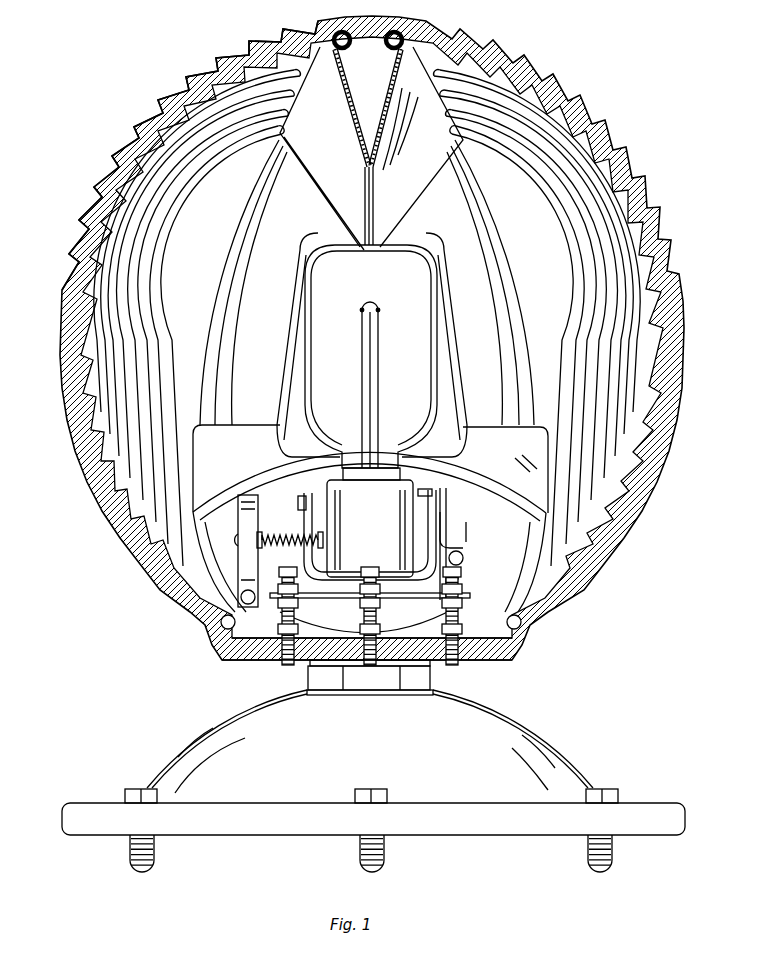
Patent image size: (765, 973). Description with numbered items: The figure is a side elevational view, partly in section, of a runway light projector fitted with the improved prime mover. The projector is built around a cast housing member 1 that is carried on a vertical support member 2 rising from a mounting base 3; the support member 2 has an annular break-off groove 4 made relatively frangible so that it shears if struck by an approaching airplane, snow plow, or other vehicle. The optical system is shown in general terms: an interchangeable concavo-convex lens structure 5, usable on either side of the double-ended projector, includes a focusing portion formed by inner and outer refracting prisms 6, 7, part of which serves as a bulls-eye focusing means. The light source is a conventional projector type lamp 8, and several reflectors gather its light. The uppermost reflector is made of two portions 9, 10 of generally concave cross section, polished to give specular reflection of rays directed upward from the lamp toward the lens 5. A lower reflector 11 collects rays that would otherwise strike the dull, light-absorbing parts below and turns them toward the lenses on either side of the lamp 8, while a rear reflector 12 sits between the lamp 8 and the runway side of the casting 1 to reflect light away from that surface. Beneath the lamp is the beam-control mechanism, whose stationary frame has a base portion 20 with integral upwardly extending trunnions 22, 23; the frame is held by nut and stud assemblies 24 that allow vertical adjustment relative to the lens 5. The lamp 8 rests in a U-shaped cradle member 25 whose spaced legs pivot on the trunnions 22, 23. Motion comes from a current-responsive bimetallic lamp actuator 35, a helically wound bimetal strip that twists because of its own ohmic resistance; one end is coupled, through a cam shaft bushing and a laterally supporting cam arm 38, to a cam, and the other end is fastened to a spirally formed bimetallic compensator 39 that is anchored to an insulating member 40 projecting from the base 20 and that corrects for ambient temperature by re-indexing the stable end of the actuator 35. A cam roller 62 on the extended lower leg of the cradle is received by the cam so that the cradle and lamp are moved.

The cast housing member 1 is at (250, 662).
The vertical support member 2 is at (322, 683).
The mounting base 3 is at (228, 735).
The annular break-off groove 4 is at (430, 664).
The lens structure 5 is at (58, 292).
The inner refracting prisms 6 is at (110, 230).
The outer refracting prisms 7 is at (110, 163).
The projector type lamp 8 is at (417, 306).
The uppermost reflector portion 9 is at (326, 148).
The uppermost reflector portion 10 is at (416, 147).
The lower reflector 11 is at (370, 529).
The rear reflector 12 is at (311, 245).
The base portion 20 is at (412, 598).
The trunnion 22 is at (309, 584).
The trunnion 23 is at (438, 507).
The nut and stud assemblies 24 is at (285, 620).
The U-shaped cradle member 25 is at (352, 577).
The bimetallic lamp actuator 35 is at (282, 540).
The cam arm 38 is at (450, 542).
The bimetallic compensator 39 is at (252, 517).
The insulating member 40 is at (249, 612).
The cam roller 62 is at (455, 574).